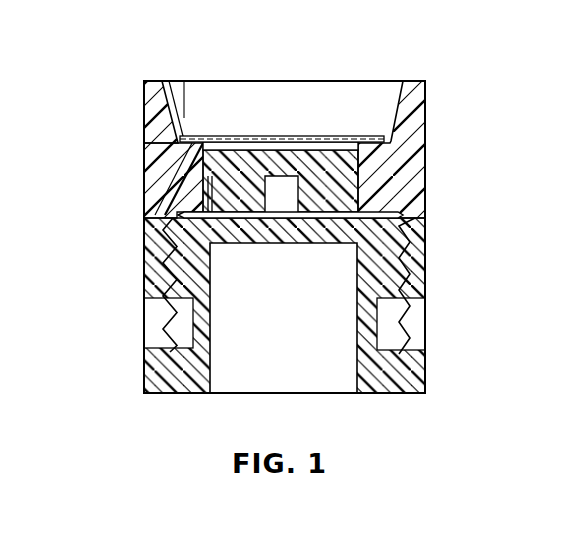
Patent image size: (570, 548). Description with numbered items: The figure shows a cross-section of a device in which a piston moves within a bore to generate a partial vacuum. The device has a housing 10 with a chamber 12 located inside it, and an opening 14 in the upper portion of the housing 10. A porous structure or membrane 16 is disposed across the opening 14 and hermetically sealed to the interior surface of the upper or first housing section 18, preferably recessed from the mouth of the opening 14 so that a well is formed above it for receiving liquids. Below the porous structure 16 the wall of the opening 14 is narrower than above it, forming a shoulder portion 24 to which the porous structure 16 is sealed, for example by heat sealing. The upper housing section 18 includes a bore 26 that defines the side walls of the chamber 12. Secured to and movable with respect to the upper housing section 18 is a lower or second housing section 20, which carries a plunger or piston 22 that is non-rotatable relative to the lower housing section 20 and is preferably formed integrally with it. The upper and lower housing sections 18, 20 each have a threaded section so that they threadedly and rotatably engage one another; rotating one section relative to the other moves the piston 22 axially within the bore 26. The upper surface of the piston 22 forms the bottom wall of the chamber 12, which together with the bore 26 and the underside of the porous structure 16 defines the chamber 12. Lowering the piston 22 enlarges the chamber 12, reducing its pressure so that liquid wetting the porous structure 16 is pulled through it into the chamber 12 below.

The housing 10 is at (440, 256).
The chamber 12 is at (330, 145).
The opening 14 is at (193, 95).
The porous structure or membrane 16 is at (310, 140).
The upper or first housing section 18 is at (410, 150).
The lower or second housing section 20 is at (424, 378).
The plunger or piston 22 is at (396, 162).
The shoulder portion 24 is at (150, 197).
The bore 26 is at (408, 136).